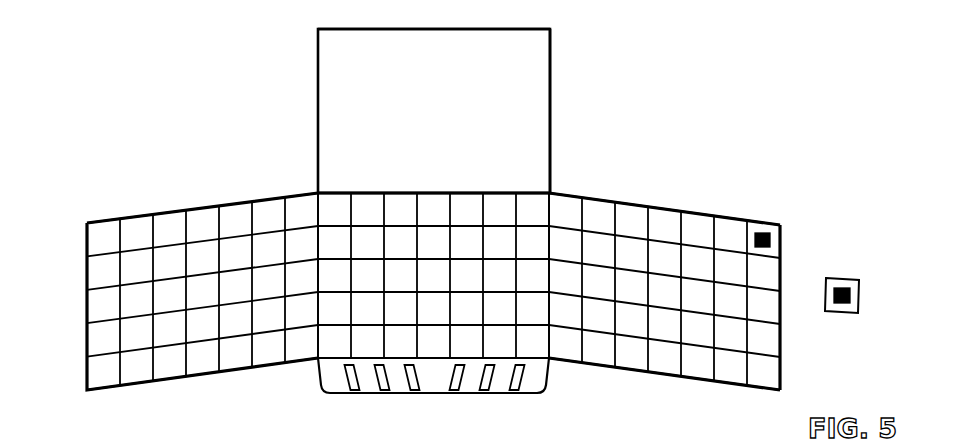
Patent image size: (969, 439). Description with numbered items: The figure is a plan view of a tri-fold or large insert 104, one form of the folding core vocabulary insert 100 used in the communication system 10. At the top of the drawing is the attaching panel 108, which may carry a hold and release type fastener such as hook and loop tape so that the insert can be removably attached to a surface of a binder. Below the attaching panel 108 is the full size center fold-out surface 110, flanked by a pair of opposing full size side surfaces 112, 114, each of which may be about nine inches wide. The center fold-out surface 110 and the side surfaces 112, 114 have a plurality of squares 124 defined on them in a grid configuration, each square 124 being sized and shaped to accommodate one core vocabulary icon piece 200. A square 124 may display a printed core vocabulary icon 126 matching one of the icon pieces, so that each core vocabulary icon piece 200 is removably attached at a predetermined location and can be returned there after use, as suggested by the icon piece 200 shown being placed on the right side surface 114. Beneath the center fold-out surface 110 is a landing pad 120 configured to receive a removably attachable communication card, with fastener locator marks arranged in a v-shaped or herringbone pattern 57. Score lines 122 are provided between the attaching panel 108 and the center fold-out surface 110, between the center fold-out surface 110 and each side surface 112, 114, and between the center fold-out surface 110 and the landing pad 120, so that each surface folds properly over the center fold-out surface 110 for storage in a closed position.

The communication system 10 is at (152, 37).
The herringbone pattern 57 is at (526, 394).
The core vocabulary insert 100 is at (318, 84).
The large insert 104 is at (551, 70).
The attaching panel 108 is at (388, 28).
The center fold-out surface 110 is at (434, 275).
The side surface 112 is at (193, 287).
The side surface 114 is at (663, 292).
The landing pad 120 is at (333, 377).
The score line 122 is at (340, 193).
The square 124 is at (781, 237).
The core vocabulary icon 126 is at (766, 232).
The core vocabulary icon piece 200 is at (859, 297).